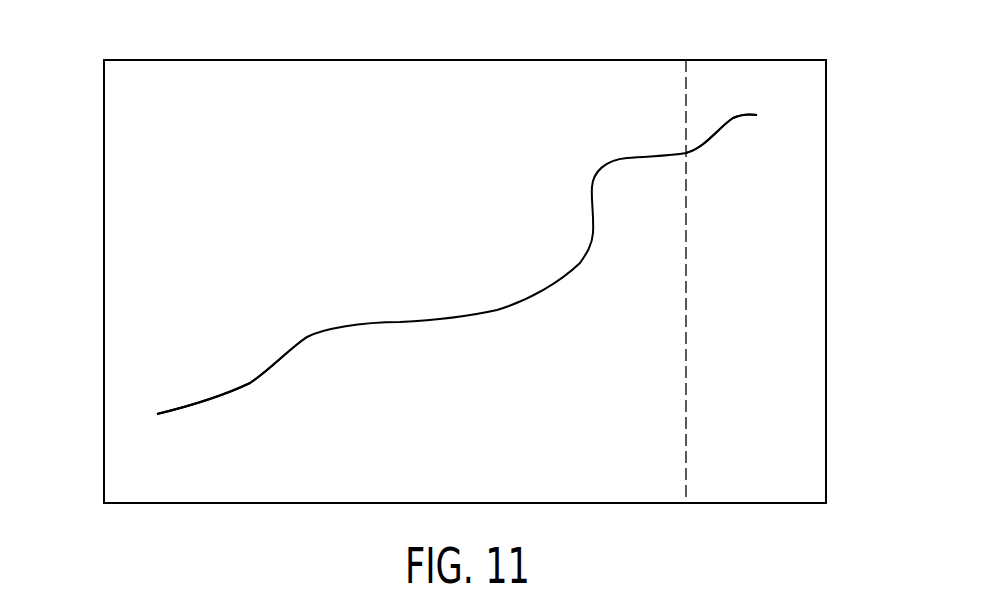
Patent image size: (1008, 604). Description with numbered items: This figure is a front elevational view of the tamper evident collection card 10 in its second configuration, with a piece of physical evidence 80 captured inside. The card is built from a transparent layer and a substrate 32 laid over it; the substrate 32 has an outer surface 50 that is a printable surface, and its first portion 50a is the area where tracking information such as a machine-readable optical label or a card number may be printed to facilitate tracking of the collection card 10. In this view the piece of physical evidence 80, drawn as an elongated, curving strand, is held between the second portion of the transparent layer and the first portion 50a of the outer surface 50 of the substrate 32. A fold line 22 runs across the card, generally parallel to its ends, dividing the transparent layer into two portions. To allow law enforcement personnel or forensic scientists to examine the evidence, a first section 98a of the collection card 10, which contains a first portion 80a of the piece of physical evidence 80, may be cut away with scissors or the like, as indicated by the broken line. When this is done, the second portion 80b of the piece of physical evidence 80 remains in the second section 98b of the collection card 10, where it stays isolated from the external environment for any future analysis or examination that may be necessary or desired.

The tamper evident collection card 10 is at (793, 517).
The fold line 22 is at (827, 282).
The substrate 32 is at (802, 93).
The outer surface of substrate 50 is at (212, 86).
The first portion of outer surface 50a is at (318, 202).
The piece of physical evidence 80 is at (497, 310).
The first portion of the piece of physical evidence 80a is at (712, 140).
The second portion of the piece of physical evidence 80b is at (312, 335).
The first section of collection card 98a is at (785, 413).
The second section of collection card 98b is at (293, 462).